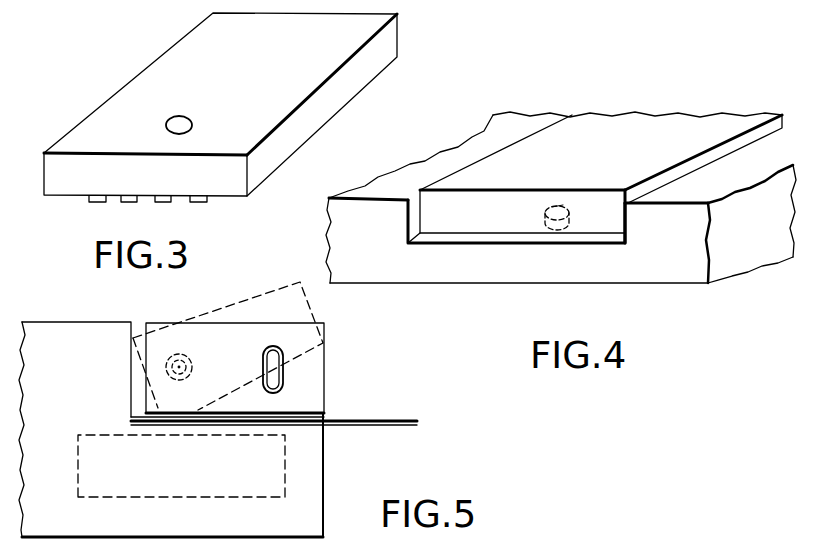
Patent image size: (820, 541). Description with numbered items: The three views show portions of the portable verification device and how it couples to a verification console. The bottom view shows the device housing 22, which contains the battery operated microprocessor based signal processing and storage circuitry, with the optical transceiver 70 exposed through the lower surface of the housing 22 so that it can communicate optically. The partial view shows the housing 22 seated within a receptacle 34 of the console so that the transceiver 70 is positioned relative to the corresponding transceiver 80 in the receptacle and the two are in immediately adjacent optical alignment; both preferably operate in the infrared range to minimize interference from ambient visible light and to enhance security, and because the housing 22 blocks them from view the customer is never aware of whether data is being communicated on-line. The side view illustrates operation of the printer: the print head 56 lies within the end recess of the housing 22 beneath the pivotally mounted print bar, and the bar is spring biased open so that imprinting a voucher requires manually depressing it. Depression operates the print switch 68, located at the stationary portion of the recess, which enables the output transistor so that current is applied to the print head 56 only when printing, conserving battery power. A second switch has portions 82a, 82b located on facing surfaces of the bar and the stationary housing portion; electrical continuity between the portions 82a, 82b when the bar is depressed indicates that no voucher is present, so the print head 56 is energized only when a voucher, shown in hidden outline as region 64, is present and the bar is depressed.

In FIG. 3, the housing 22 is at (387, 50).
In FIG. 4, the housing 22 is at (598, 137).
In FIG. 3, the optical transceiver 70 is at (182, 110).
In FIG. 4, the optical transceiver 70 is at (565, 197).
In FIG. 4, the recess 34 is at (630, 228).
In FIG. 4, the phototransistor receiver 80 is at (578, 236).
In FIG. 5, the print head 56 is at (130, 422).
In FIG. 5, the cavity 64 is at (157, 433).
In FIG. 5, the print switch 68 is at (305, 355).
In FIG. 5, the switch portion 82a is at (323, 420).
In FIG. 5, the switch portion 82b is at (325, 427).